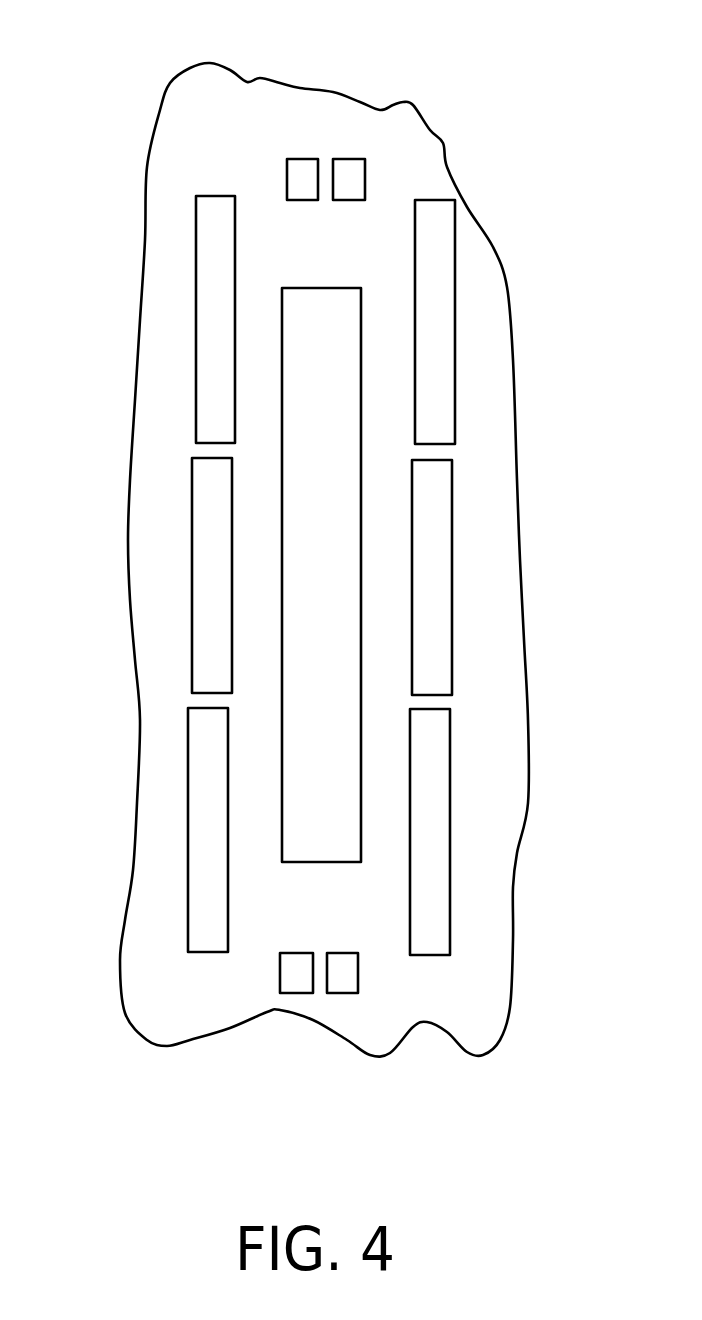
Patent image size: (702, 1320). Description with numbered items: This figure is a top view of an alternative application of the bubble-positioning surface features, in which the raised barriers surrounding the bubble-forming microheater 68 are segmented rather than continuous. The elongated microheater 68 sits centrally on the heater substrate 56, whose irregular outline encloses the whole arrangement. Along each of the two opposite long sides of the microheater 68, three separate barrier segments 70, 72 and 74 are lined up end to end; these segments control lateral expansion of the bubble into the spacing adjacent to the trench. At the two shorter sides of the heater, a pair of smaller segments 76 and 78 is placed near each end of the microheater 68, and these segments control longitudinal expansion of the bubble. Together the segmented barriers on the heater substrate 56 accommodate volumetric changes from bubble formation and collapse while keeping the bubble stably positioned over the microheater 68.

The heater substrate 56 is at (168, 143).
The microheater 68 is at (340, 505).
The first lateral barrier segment 70 is at (202, 825).
The second lateral barrier segment 72 is at (203, 507).
The third lateral barrier segment 74 is at (207, 228).
The end barrier segment 76 is at (300, 170).
The end barrier segment 78 is at (353, 167).